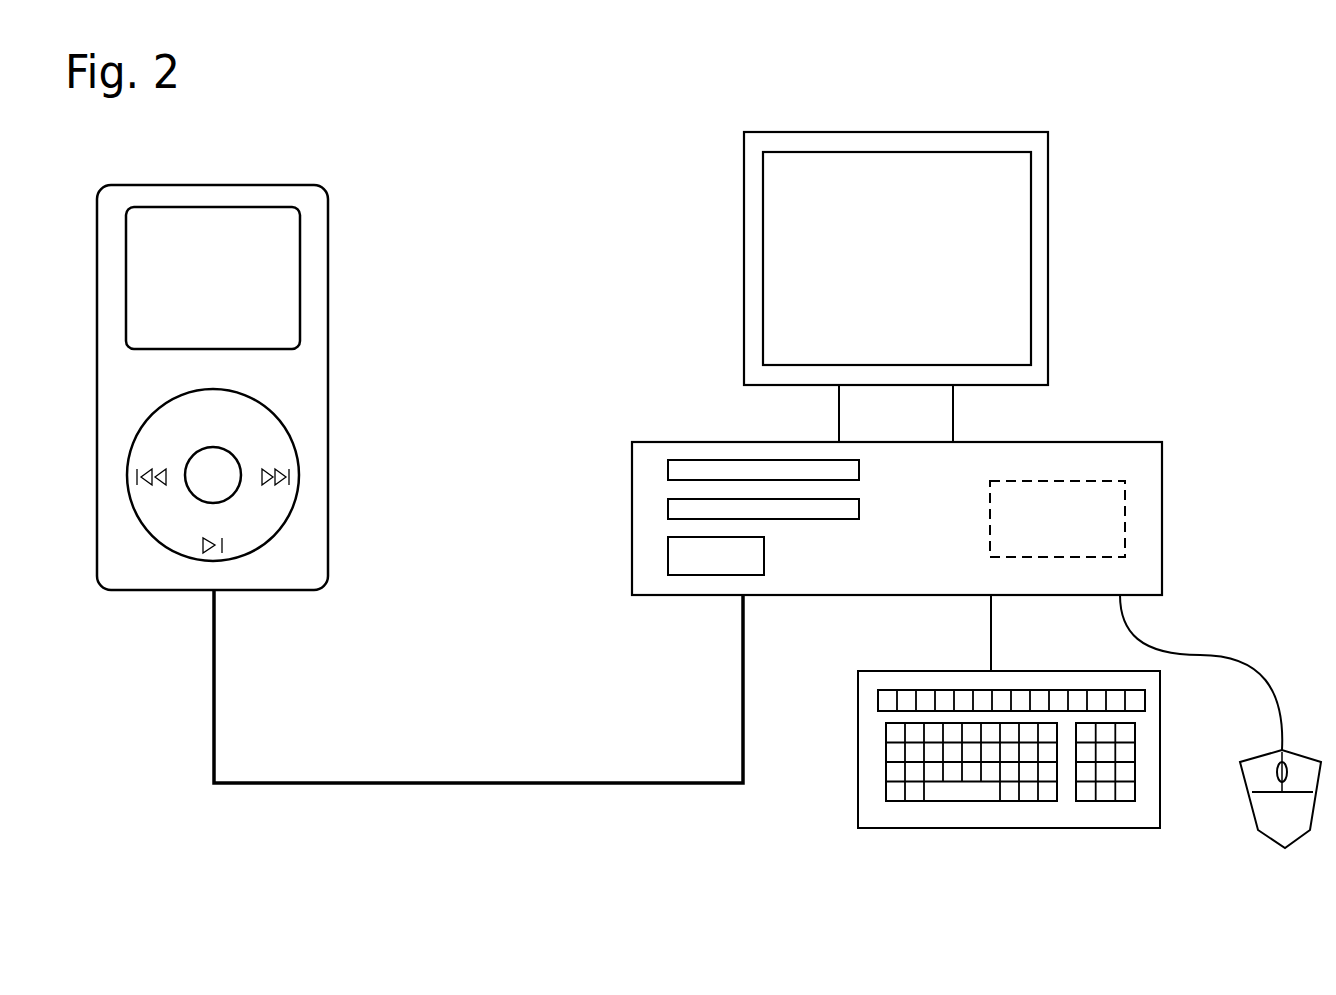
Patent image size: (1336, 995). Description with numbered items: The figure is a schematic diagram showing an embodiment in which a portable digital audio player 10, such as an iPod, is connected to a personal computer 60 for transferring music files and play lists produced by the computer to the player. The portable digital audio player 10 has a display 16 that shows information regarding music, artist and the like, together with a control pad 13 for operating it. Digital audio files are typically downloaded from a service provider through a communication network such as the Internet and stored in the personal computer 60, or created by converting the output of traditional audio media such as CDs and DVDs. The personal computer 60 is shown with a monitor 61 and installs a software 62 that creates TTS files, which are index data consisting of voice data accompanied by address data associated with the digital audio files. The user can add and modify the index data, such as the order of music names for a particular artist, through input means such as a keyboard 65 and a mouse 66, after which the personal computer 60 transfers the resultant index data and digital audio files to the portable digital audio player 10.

The portable digital audio player 10 is at (296, 158).
The control pad 13 is at (273, 450).
The display 16 is at (278, 310).
The personal computer 60 is at (703, 410).
The monitor 61 is at (1010, 230).
The software 62 is at (1060, 490).
The keyboard 65 is at (1022, 818).
The mouse 66 is at (1283, 838).